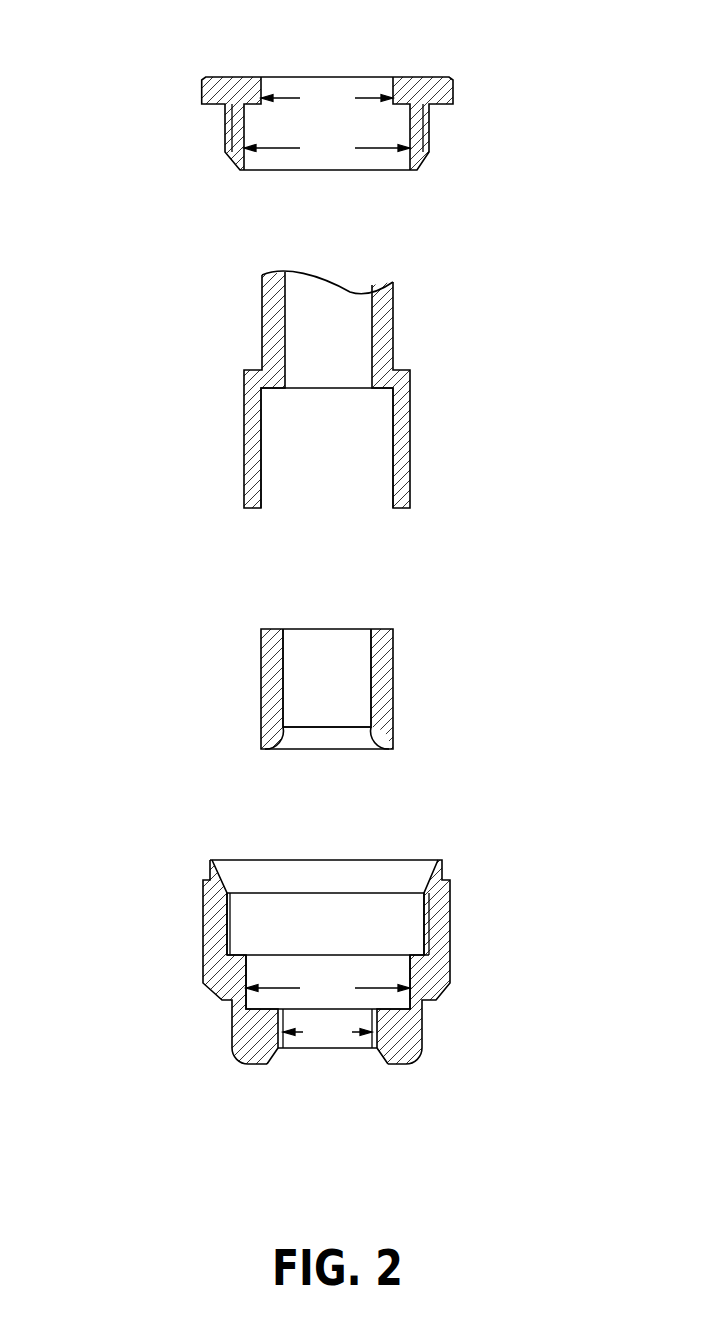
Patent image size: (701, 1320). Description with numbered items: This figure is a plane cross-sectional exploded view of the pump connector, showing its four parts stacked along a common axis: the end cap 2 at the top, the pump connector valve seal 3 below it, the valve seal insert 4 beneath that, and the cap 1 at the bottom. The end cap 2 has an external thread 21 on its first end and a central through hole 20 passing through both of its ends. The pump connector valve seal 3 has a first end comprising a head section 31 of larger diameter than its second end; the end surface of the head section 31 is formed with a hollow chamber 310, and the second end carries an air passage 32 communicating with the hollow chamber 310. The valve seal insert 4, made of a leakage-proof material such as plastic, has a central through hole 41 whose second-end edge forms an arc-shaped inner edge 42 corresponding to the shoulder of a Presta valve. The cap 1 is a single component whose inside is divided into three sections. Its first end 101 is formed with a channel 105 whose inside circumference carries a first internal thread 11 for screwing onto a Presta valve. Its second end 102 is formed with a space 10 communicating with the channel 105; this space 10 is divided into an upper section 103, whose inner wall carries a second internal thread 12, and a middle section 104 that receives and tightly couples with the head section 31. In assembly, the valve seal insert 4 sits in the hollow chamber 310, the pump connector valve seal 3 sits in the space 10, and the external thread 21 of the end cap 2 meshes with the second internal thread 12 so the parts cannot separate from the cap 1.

The cap 1 is at (327, 962).
The space 10 is at (352, 913).
The first end of the cap 101 is at (247, 1050).
The second end of the cap 102 is at (213, 932).
The upper section 103 is at (310, 913).
The middle section 104 is at (253, 999).
The channel 105 is at (338, 1043).
The first internal thread 11 is at (282, 1018).
The second internal thread 12 is at (230, 923).
The end cap 2 is at (380, 86).
The through hole 20 is at (362, 85).
The external thread 21 is at (428, 145).
The pump connector valve seal 3 is at (389, 411).
The head section 31 is at (402, 473).
The hollow chamber 310 is at (359, 497).
The air passage 32 is at (358, 331).
The valve seal insert 4 is at (341, 723).
The through hole 41 is at (293, 670).
The inner edge 42 is at (377, 750).